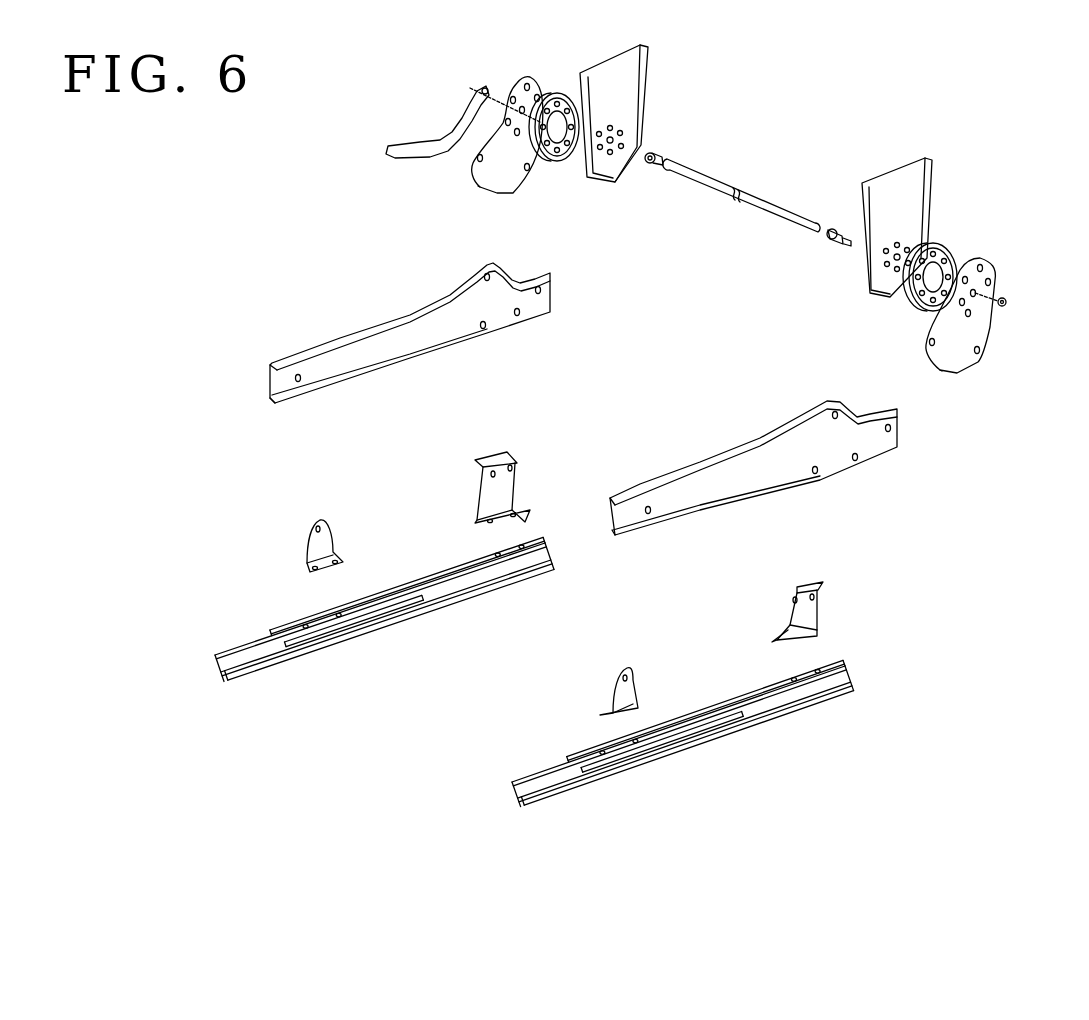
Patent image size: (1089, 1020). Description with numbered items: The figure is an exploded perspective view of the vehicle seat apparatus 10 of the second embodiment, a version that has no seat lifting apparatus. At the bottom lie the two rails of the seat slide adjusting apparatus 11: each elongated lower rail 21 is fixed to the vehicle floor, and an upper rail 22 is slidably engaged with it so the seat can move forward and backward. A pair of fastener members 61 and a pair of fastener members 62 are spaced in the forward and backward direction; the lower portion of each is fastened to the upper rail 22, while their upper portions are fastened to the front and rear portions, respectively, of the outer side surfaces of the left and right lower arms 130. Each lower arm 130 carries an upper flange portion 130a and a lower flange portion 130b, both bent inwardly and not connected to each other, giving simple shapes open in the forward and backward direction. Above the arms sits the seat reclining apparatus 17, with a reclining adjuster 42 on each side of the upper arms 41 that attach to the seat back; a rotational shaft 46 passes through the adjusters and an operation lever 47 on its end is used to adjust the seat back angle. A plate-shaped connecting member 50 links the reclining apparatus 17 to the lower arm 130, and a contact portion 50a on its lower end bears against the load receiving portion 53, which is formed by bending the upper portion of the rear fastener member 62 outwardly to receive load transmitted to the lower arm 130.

The vehicle seat apparatus 10 is at (832, 128).
The seat slide adjusting apparatus 11 is at (723, 758).
The seat reclining apparatus 17 is at (962, 217).
The lower rail 21 is at (313, 650).
The upper rail 22 is at (403, 607).
The upper arm 41 is at (630, 72).
The reclining adjuster 42 is at (558, 93).
The rotational shaft 46 is at (755, 207).
The operation lever 47 is at (415, 140).
The connecting member 50 is at (513, 163).
The contact portion 50a is at (497, 193).
The load receiving portion 53 is at (493, 450).
The fastener member 61 is at (302, 553).
The fastener member 62 is at (490, 497).
The lower arm 130 is at (373, 347).
The upper flange portion 130a is at (292, 357).
The lower flange portion 130b is at (390, 372).